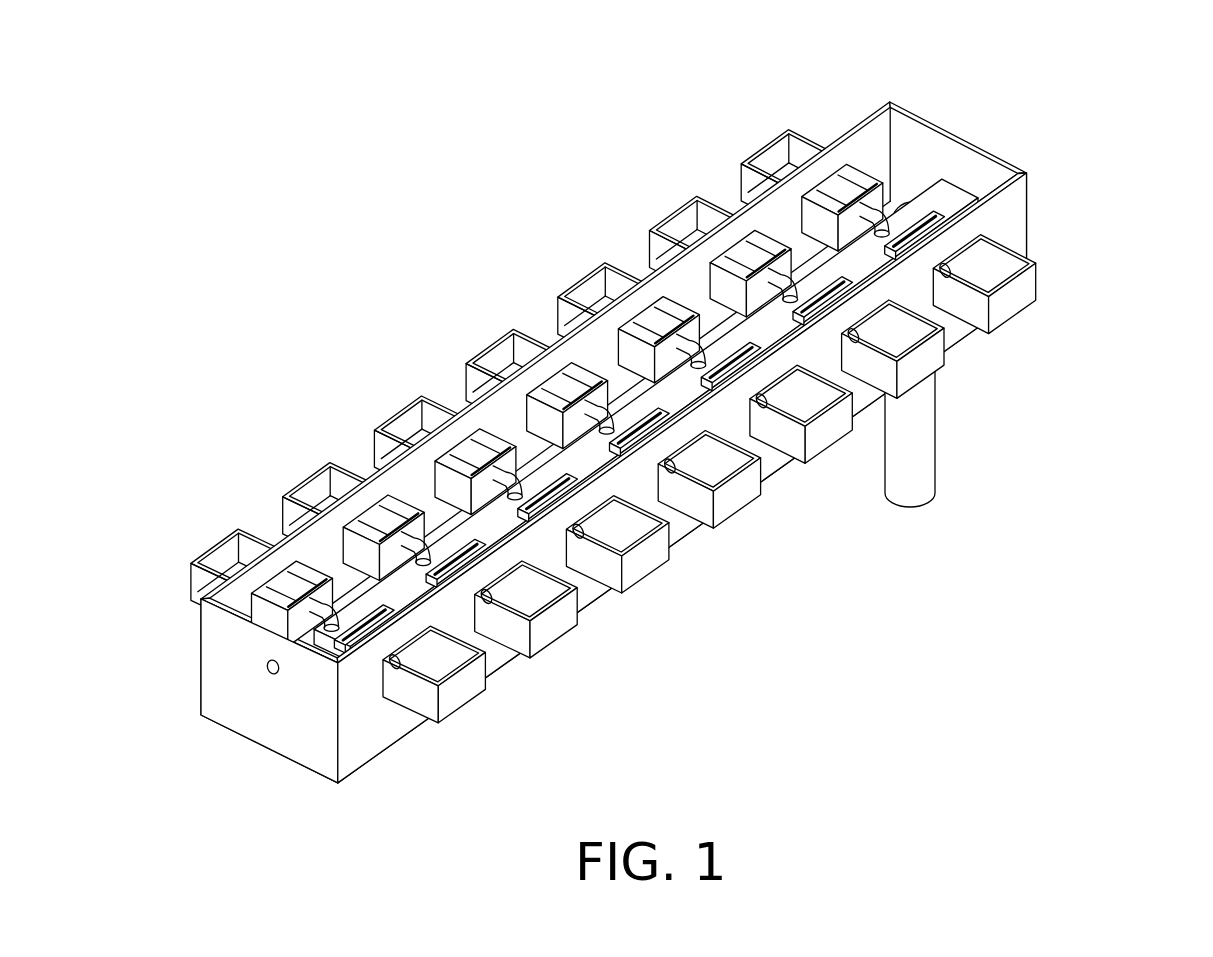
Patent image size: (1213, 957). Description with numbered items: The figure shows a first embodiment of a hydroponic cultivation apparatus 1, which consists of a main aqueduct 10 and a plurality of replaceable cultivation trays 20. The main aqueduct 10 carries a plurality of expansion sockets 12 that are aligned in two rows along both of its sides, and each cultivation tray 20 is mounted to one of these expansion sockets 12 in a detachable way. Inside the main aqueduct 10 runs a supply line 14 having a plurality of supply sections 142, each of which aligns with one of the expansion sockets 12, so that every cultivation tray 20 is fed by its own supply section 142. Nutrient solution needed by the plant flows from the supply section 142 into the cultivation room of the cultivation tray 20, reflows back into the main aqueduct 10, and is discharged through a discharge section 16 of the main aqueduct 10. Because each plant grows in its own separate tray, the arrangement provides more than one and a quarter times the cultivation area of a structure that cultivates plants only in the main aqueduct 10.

The hydroponic cultivation apparatus 1 is at (697, 412).
The main aqueduct 10 is at (241, 711).
The expansion socket 12 is at (290, 566).
The supply line 14 is at (577, 450).
The supply section 142 is at (590, 520).
The discharge section 16 is at (916, 208).
The replaceable cultivation tray 20 is at (450, 694).